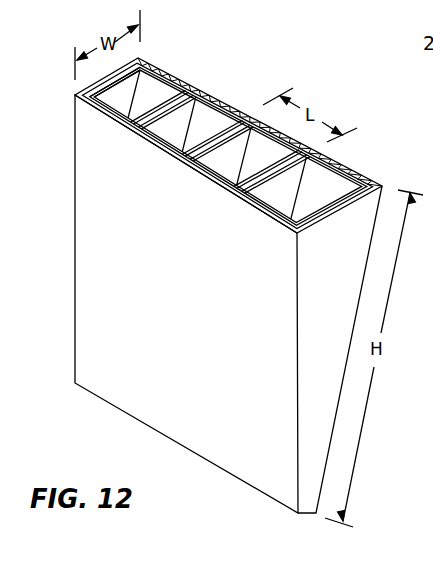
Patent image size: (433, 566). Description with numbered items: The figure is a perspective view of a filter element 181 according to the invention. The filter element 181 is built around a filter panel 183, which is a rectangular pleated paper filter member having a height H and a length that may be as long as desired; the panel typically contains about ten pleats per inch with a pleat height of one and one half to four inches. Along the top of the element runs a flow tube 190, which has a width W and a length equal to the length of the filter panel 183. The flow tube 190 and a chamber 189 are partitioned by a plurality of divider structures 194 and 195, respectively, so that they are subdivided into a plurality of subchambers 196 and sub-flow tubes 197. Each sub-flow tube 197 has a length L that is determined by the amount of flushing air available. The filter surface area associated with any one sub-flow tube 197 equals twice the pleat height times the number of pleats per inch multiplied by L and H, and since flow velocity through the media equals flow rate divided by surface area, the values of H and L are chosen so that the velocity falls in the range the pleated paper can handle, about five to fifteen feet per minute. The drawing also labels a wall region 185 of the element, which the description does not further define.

The filter element 181 is at (326, 94).
The filter panel 183 is at (348, 166).
The front side wall 185 is at (83, 246).
The chamber 189 is at (219, 97).
The flow tube 190 is at (146, 57).
The divider structures 194 is at (175, 72).
The divider structures 195 is at (143, 141).
The subchambers 196 is at (352, 176).
The sub-flow tubes 197 is at (112, 98).